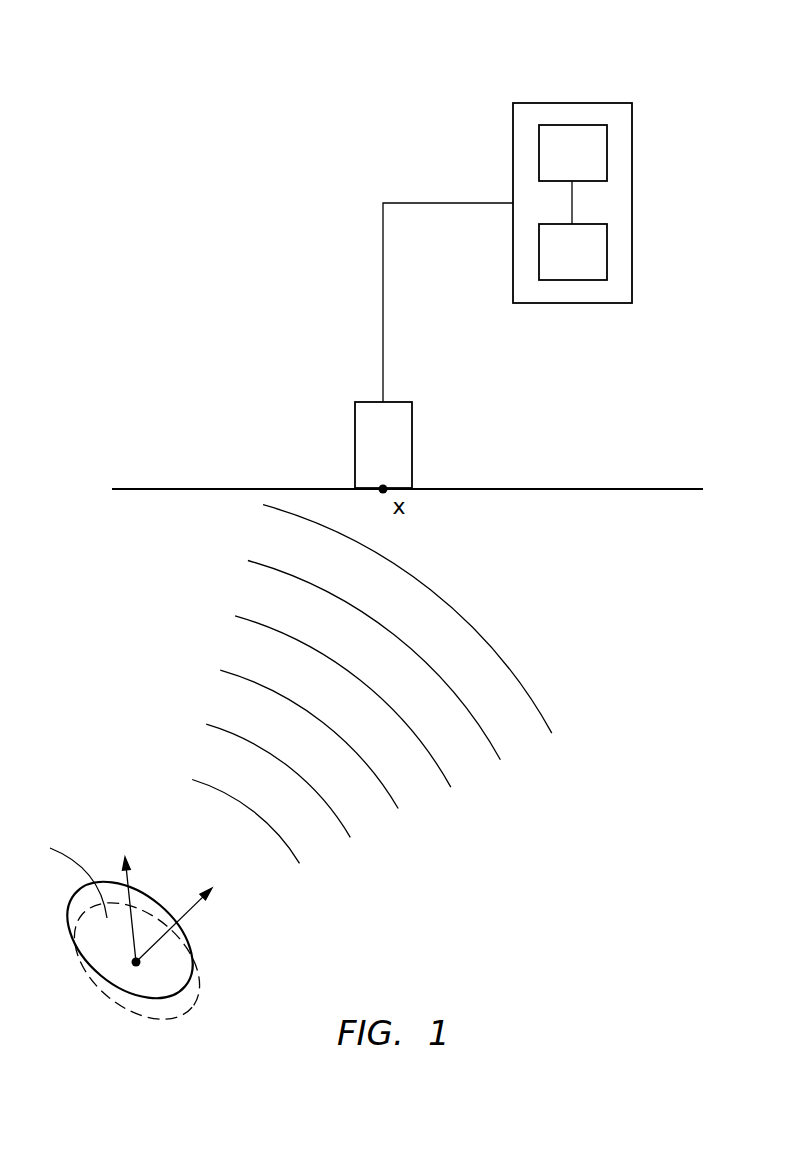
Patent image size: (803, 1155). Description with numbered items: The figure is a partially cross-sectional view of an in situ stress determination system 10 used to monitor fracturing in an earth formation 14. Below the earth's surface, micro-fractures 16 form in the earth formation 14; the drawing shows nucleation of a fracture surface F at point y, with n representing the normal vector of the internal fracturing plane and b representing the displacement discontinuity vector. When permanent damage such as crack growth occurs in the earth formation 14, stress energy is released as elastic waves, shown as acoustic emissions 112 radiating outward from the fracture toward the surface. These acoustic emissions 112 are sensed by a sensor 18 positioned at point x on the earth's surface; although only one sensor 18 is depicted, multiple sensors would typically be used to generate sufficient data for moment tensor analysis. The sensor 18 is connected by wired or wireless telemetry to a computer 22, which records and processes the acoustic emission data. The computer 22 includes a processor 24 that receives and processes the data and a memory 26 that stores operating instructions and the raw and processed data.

The in situ stress determination system 10 is at (303, 55).
The computer 22 is at (632, 141).
The processor 24 is at (539, 135).
The memory 26 is at (539, 250).
The sensor 18 is at (355, 418).
The acoustic waves 112 is at (512, 668).
The earth formation 14 is at (435, 873).
The micro-fractures 16 is at (188, 934).